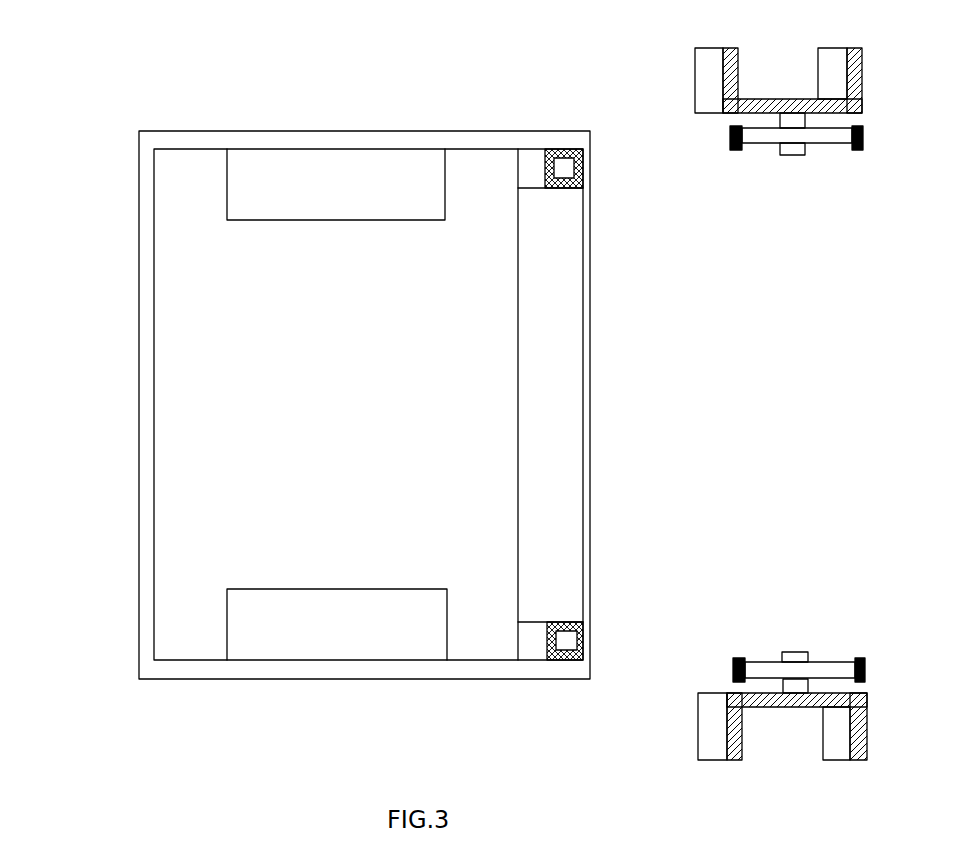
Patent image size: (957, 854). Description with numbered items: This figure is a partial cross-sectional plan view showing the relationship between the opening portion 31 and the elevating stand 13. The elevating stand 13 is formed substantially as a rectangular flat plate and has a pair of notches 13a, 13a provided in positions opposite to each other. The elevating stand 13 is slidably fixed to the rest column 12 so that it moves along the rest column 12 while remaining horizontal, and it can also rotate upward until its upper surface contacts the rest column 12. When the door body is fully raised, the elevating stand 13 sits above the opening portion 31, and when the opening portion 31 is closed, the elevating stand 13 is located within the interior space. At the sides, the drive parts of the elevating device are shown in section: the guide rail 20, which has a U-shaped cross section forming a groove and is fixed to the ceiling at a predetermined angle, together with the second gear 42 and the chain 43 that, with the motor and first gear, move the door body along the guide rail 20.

The rest column 12 is at (560, 155).
The elevating stand 13 is at (188, 372).
The notch 13a is at (338, 148).
The guide rail 20 is at (862, 64).
The opening portion 31 is at (565, 360).
The second gear 42 is at (827, 145).
The chain 43 is at (863, 137).